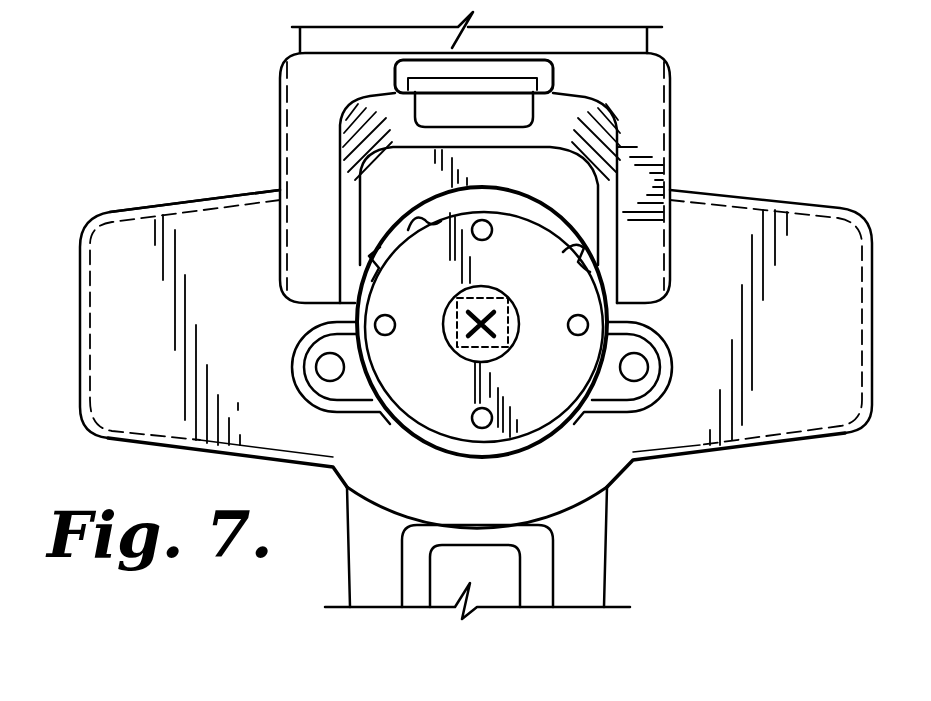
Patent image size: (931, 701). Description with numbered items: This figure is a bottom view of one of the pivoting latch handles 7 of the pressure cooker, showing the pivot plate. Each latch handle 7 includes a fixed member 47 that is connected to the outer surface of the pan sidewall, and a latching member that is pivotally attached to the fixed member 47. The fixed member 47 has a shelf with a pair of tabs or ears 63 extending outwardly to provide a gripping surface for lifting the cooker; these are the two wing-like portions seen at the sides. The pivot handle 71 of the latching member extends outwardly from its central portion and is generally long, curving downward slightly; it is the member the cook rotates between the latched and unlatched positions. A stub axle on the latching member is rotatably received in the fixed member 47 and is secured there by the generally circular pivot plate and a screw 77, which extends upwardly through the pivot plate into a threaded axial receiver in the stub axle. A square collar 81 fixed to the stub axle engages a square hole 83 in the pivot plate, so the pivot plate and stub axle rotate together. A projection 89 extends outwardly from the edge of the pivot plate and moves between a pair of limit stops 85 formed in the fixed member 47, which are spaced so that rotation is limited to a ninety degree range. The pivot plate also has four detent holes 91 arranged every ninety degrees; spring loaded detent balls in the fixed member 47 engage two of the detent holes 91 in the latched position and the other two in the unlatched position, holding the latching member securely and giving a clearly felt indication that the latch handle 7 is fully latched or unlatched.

The latch handle 7 is at (729, 511).
The fixed member 47 is at (223, 184).
The tabs or ears 63 is at (80, 318).
The pivot handle 71 is at (610, 546).
The screw 77 is at (520, 352).
The square collar 81 is at (485, 298).
The square hole 83 is at (510, 322).
The limit stops 85 is at (375, 272).
The projection 89 is at (427, 227).
The detent holes 91 is at (396, 326).